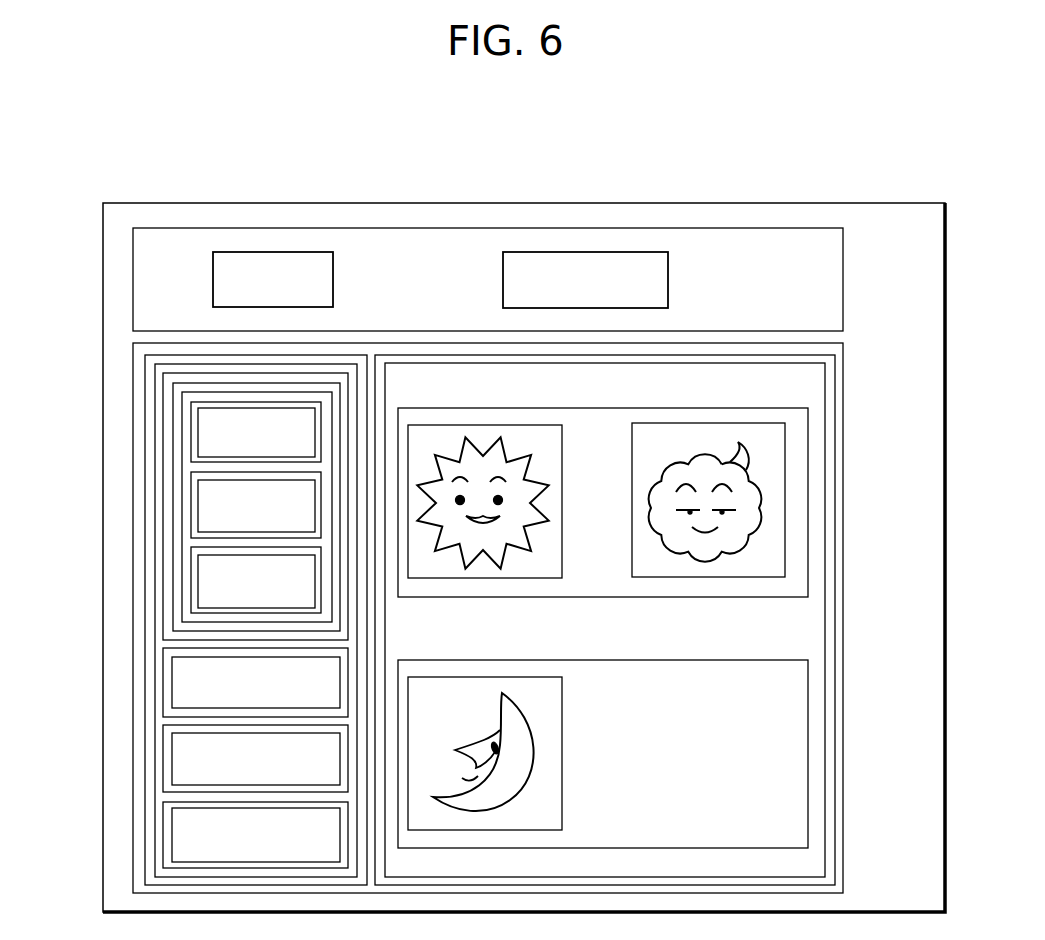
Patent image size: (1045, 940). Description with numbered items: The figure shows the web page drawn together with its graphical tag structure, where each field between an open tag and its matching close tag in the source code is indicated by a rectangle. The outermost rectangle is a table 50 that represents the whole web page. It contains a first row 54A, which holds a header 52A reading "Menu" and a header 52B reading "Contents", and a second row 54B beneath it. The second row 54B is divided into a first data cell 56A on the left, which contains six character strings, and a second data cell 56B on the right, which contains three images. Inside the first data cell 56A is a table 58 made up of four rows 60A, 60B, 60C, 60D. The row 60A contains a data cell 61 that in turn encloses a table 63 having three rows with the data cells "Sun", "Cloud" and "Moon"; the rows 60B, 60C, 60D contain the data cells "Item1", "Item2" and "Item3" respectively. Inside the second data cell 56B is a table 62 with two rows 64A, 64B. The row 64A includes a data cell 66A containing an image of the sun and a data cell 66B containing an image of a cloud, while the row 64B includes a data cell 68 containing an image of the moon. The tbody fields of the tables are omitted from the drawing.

The table 50 is at (693, 203).
The header 52A is at (334, 278).
The header 52B is at (669, 280).
The first row 54A is at (845, 280).
The second row 54B is at (845, 416).
The first data cell 56A is at (145, 380).
The second data cell 56B is at (836, 484).
The table 58 is at (155, 410).
The row 60A is at (163, 452).
The row 60B is at (163, 683).
The row 60C is at (163, 757).
The row 60D is at (163, 833).
The data cell 61 is at (173, 505).
The table 62 is at (826, 541).
The table 63 is at (182, 555).
The row 64A is at (663, 598).
The row 64B is at (498, 660).
The data cell 66A is at (565, 488).
The data cell 66B is at (631, 522).
The data cell 68 is at (563, 742).